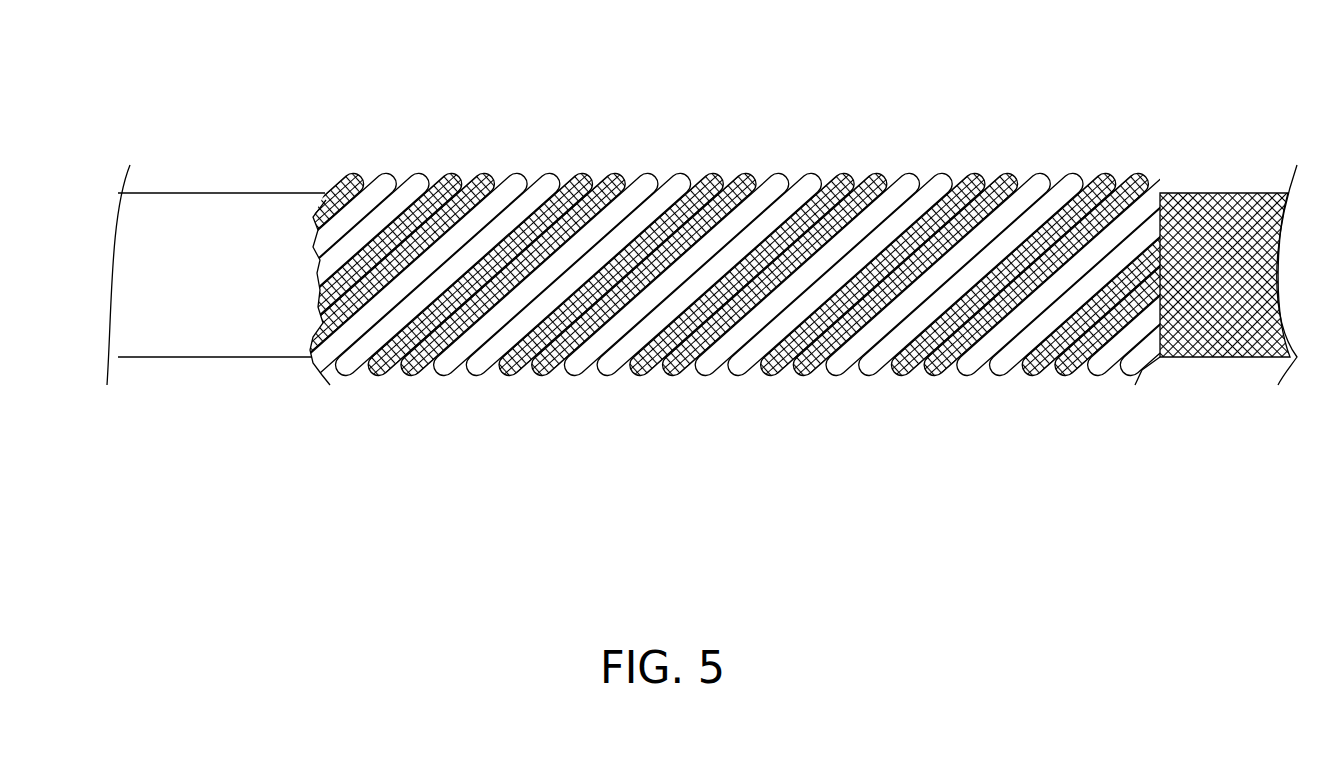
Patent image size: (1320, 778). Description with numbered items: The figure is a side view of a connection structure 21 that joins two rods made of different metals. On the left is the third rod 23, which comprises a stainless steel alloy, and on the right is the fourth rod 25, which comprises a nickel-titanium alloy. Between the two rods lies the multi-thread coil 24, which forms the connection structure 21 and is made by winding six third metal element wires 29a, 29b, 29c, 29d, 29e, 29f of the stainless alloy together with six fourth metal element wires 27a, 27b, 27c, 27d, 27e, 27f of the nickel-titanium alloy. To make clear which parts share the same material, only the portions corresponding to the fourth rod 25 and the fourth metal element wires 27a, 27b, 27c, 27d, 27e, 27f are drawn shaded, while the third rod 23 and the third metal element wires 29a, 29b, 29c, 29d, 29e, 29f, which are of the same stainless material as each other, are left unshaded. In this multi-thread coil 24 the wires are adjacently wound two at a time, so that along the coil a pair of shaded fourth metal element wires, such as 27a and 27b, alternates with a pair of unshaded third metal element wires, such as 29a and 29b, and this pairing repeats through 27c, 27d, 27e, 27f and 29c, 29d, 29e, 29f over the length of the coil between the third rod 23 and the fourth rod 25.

The connection structure 21 is at (713, 274).
The third rod 23 is at (265, 213).
The multi-thread coil 24 is at (727, 247).
The fourth rod 25 is at (1191, 194).
The fourth metal element wire 27a is at (982, 167).
The fourth metal element wire 27b is at (1015, 167).
The fourth metal element wire 27c is at (721, 167).
The fourth metal element wire 27d is at (753, 167).
The fourth metal element wire 27e is at (852, 167).
The fourth metal element wire 27f is at (884, 167).
The third metal element wire 29a is at (841, 450).
The third metal element wire 29b is at (873, 450).
The third metal element wire 29c is at (972, 450).
The third metal element wire 29d is at (1004, 450).
The third metal element wire 29e is at (698, 383).
The third metal element wire 29f is at (731, 383).